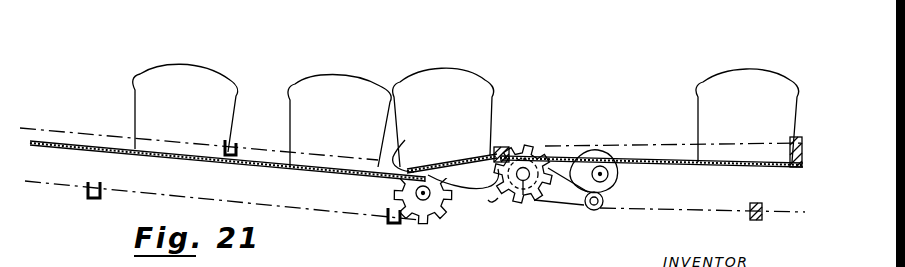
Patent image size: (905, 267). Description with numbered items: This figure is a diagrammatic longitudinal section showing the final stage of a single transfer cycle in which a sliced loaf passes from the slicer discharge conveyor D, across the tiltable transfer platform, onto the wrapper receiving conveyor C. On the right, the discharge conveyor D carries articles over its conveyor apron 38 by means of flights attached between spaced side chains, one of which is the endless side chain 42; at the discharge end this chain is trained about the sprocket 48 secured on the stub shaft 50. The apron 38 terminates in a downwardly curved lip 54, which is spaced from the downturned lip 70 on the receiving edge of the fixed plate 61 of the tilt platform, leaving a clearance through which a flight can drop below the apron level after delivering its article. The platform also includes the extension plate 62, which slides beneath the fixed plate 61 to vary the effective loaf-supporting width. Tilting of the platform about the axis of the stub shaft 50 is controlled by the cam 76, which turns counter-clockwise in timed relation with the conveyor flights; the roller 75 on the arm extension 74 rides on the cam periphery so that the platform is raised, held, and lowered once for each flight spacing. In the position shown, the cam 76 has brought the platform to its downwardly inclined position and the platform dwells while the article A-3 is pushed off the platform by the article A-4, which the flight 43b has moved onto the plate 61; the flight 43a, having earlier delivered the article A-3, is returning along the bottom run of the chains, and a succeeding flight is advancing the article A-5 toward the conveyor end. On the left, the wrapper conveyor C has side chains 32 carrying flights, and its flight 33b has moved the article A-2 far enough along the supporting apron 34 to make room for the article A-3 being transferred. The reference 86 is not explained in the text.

The supporting apron 34 is at (60, 143).
The wrapper conveyor flight 33b is at (234, 142).
The endless driven side chains 32 is at (312, 211).
The belt end hook 86 is at (405, 140).
The fixed plate 61 is at (459, 157).
The discharge conveyor flight 43b is at (497, 148).
The extension plate 62 is at (462, 165).
The downturned lip 70 is at (486, 167).
The downwardly curved lip 54 is at (498, 198).
The chain sprocket 48 is at (508, 196).
The stub shaft 50 is at (526, 203).
The arm extension 74 is at (574, 198).
The roller 75 is at (604, 212).
The cam 76 is at (617, 179).
The conveyor apron 38 is at (641, 160).
The discharge conveyor flight 43a is at (790, 139).
The endless side chain 42 is at (676, 208).
The article A-2 is at (150, 66).
The article A-3 is at (317, 78).
The article A-4 is at (453, 68).
The article A-5 is at (703, 83).
The receiving conveyor C is at (95, 205).
The discharge conveyor D is at (712, 216).